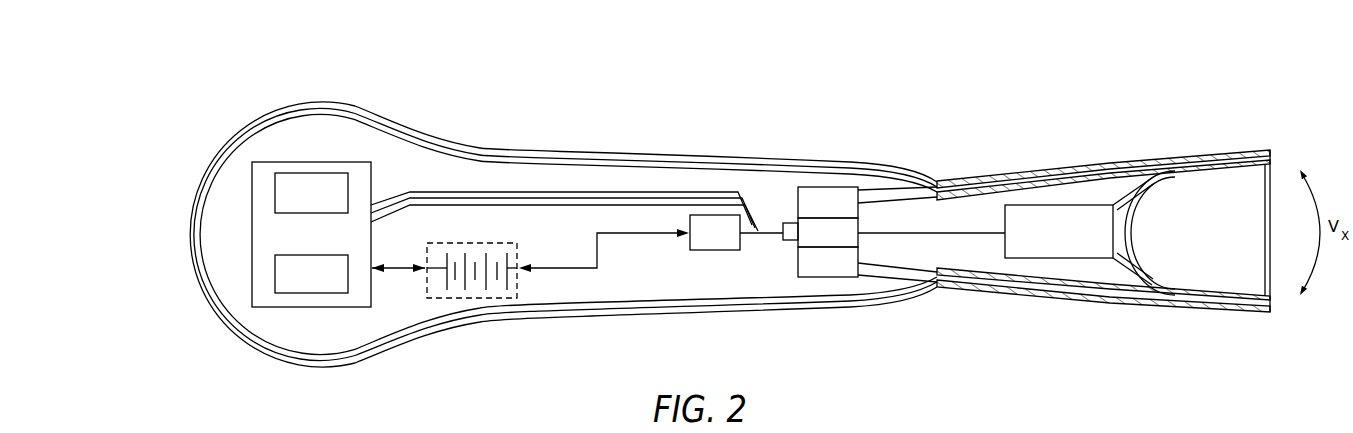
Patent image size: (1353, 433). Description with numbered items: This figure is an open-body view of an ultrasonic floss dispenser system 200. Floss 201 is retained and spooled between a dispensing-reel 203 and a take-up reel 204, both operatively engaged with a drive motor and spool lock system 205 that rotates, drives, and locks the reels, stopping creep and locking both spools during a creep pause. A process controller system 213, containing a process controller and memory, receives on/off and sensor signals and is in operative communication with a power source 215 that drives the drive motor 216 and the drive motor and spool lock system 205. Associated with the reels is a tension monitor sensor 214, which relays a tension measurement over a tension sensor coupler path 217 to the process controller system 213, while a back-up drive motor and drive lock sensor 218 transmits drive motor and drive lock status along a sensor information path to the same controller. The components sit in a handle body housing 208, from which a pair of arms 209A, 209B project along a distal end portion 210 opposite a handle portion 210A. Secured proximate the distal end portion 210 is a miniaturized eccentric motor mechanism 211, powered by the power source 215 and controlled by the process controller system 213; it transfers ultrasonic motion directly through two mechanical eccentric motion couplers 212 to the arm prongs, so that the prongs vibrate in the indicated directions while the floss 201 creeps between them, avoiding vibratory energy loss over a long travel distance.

The ultrasonic floss dispenser system 200 is at (207, 97).
The floss 201 is at (885, 193).
The dispensing-reel 203 is at (838, 198).
The take-up reel 204 is at (838, 267).
The drive motor and spool lock system 205 is at (808, 227).
The handle body housing 208 is at (302, 366).
The arm 209A is at (1198, 153).
The arm 209B is at (1217, 310).
The distal end portion 210 is at (1085, 328).
The handle portion 210A is at (190, 262).
The eccentric motor mechanism 211 is at (1067, 203).
The mechanical eccentric motion coupler 212 is at (1123, 193).
The process controller system 213 is at (252, 237).
The tension monitor sensor 214 is at (792, 242).
The power source 215 is at (508, 297).
The drive motor 216 is at (702, 250).
The tension sensor coupler path 217 is at (400, 190).
The drive motor and drive lock sensor 218 is at (397, 212).